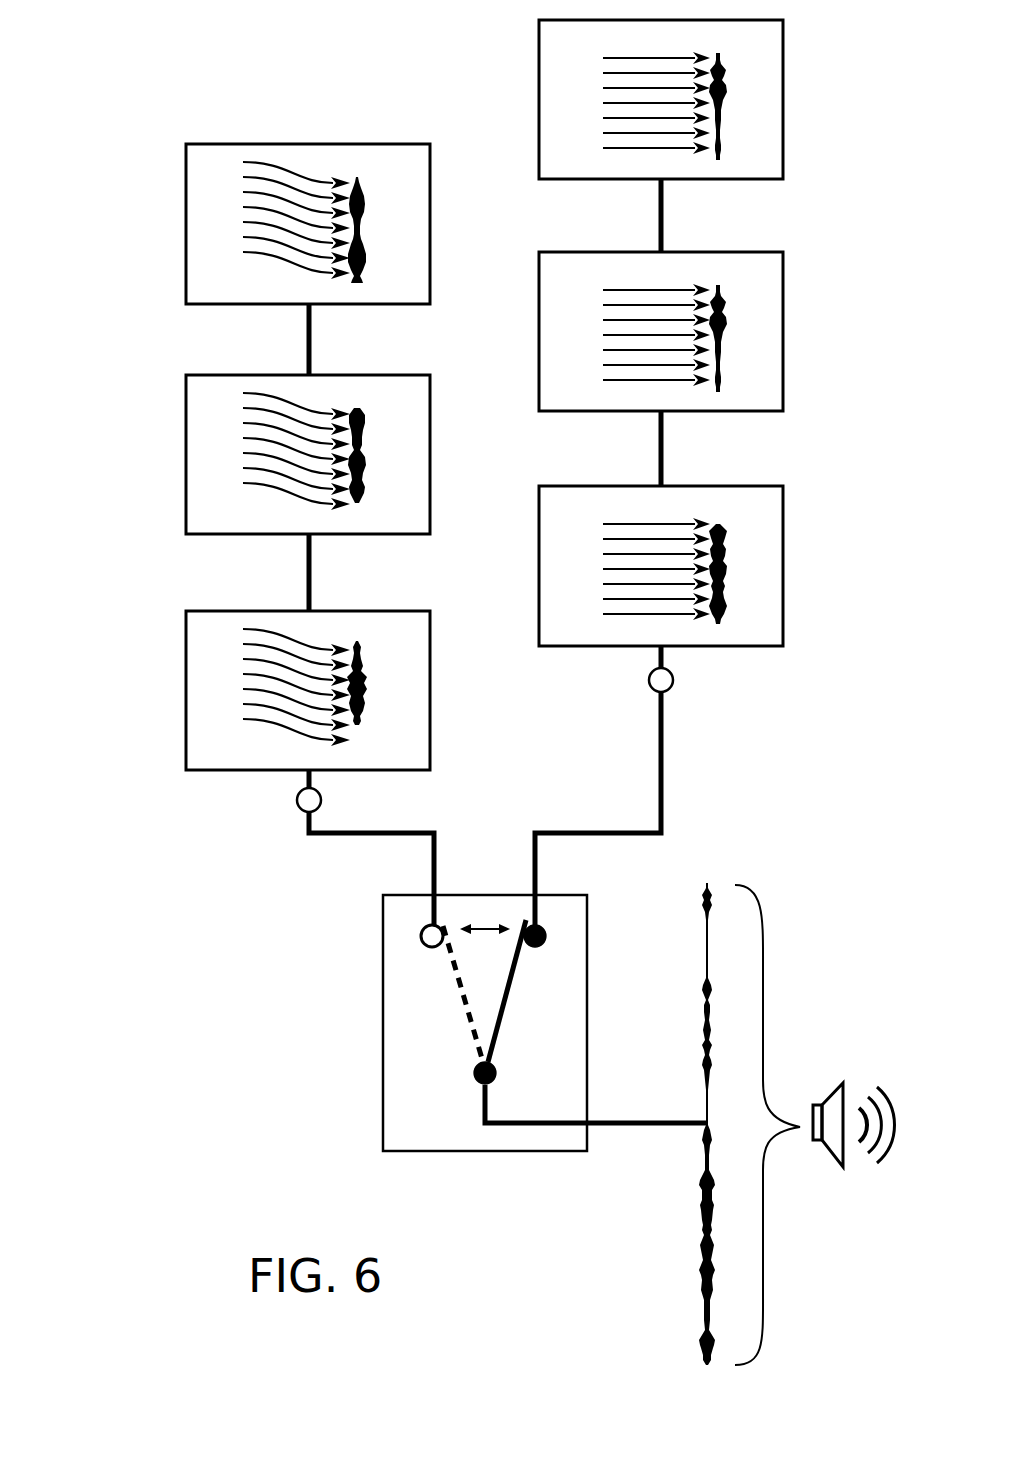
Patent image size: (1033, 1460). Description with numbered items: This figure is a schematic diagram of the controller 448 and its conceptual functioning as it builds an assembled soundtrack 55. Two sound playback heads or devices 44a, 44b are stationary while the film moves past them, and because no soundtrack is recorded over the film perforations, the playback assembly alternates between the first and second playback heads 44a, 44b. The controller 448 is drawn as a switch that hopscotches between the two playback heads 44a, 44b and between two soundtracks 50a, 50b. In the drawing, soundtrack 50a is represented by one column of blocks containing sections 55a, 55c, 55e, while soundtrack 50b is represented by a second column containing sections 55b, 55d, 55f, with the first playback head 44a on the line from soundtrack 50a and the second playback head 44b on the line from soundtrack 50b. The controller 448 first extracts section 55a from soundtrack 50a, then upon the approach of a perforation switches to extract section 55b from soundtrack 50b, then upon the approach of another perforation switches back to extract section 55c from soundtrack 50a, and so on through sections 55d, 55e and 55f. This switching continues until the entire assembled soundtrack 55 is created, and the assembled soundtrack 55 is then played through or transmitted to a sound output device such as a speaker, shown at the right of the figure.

The soundtrack 50a is at (158, 147).
The soundtrack 50b is at (810, 22).
The section 55a is at (308, 690).
The section 55b is at (661, 566).
The section 55c is at (308, 454).
The section 55d is at (661, 331).
The section 55e is at (308, 224).
The section 55f is at (661, 99).
The first playback head 44a is at (297, 801).
The second playback head 44b is at (673, 682).
The controller 448 is at (385, 1030).
The assembled soundtrack 55 is at (705, 985).